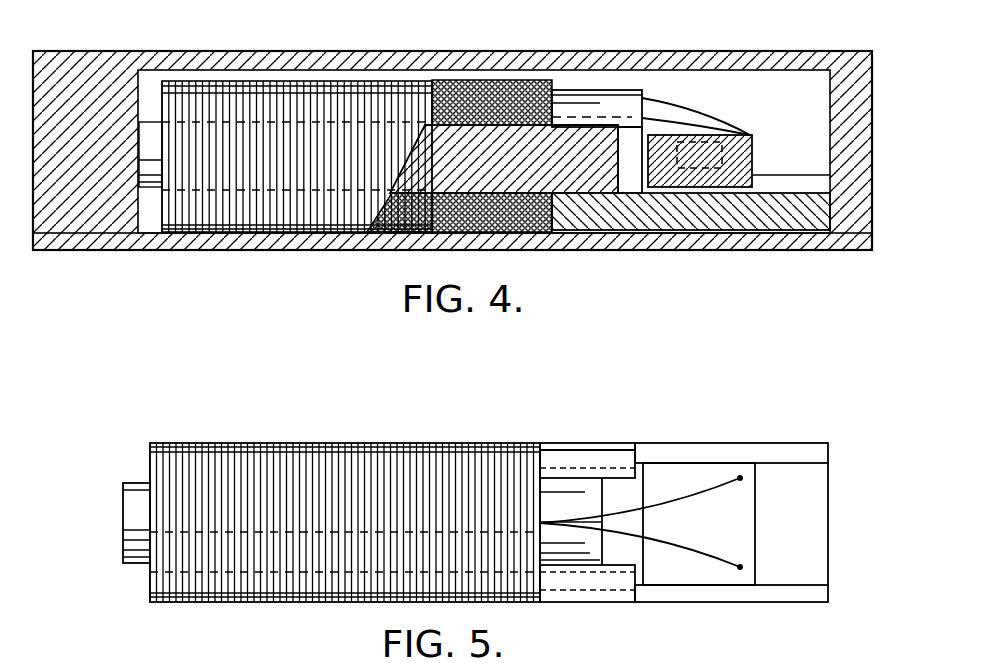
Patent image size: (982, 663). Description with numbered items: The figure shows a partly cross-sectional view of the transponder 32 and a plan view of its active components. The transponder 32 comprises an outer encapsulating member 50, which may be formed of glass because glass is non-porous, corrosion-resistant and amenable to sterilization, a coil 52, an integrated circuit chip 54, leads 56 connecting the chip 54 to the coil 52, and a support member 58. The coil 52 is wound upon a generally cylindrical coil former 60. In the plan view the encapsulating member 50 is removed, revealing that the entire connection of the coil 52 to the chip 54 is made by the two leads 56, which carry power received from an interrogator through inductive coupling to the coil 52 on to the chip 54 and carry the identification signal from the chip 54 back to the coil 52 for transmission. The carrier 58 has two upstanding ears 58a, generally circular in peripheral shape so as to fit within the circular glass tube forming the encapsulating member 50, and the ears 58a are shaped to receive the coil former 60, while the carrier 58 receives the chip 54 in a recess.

In FIG. 4, the transponder 32 is at (268, 252).
In FIG. 4, the outer encapsulating member 50 is at (124, 51).
In FIG. 4, the coil 52 is at (233, 103).
In FIG. 5, the coil 52 is at (202, 577).
In FIG. 4, the integrated circuit chip 54 is at (737, 124).
In FIG. 5, the integrated circuit chip 54 is at (705, 573).
In FIG. 4, the leads 56 is at (666, 100).
In FIG. 5, the leads 56 is at (680, 506).
In FIG. 4, the support member 58 is at (765, 218).
In FIG. 5, the support member 58 is at (803, 595).
In FIG. 4, the upstanding ears 58a is at (627, 190).
In FIG. 5, the upstanding ears 58a is at (592, 462).
In FIG. 4, the coil former 60 is at (151, 190).
In FIG. 5, the coil former 60 is at (133, 537).